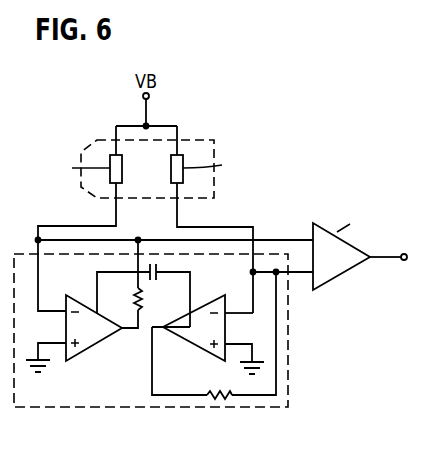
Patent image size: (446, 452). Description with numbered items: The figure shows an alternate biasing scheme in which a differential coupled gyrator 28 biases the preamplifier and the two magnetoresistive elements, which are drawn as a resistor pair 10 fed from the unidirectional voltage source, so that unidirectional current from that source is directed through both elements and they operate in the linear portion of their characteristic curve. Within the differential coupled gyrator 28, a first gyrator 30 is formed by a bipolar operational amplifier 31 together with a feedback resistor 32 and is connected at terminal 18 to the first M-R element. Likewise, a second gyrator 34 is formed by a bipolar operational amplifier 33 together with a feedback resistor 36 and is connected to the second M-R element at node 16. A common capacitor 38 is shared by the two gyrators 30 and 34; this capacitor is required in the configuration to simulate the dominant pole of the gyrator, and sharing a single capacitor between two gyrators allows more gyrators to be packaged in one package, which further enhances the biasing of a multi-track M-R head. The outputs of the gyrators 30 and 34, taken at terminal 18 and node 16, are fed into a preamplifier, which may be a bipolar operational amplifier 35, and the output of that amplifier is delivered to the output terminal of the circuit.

The bridge circuit with heater resistors RH1 and RH2 10 is at (196, 139).
The terminal 18 is at (38, 240).
The node 16 is at (253, 272).
The differential coupled gyrator 28 is at (290, 346).
The gyrator 30 is at (96, 357).
The bipolar operational amplifier 31 is at (66, 326).
The feedback resistor 32 is at (140, 300).
The bipolar operational amplifier 33 is at (229, 330).
The gyrator 34 is at (185, 352).
The bipolar operational amplifier 35 is at (348, 272).
The feedback resistor 36 is at (221, 400).
The common capacitor 38 is at (156, 280).